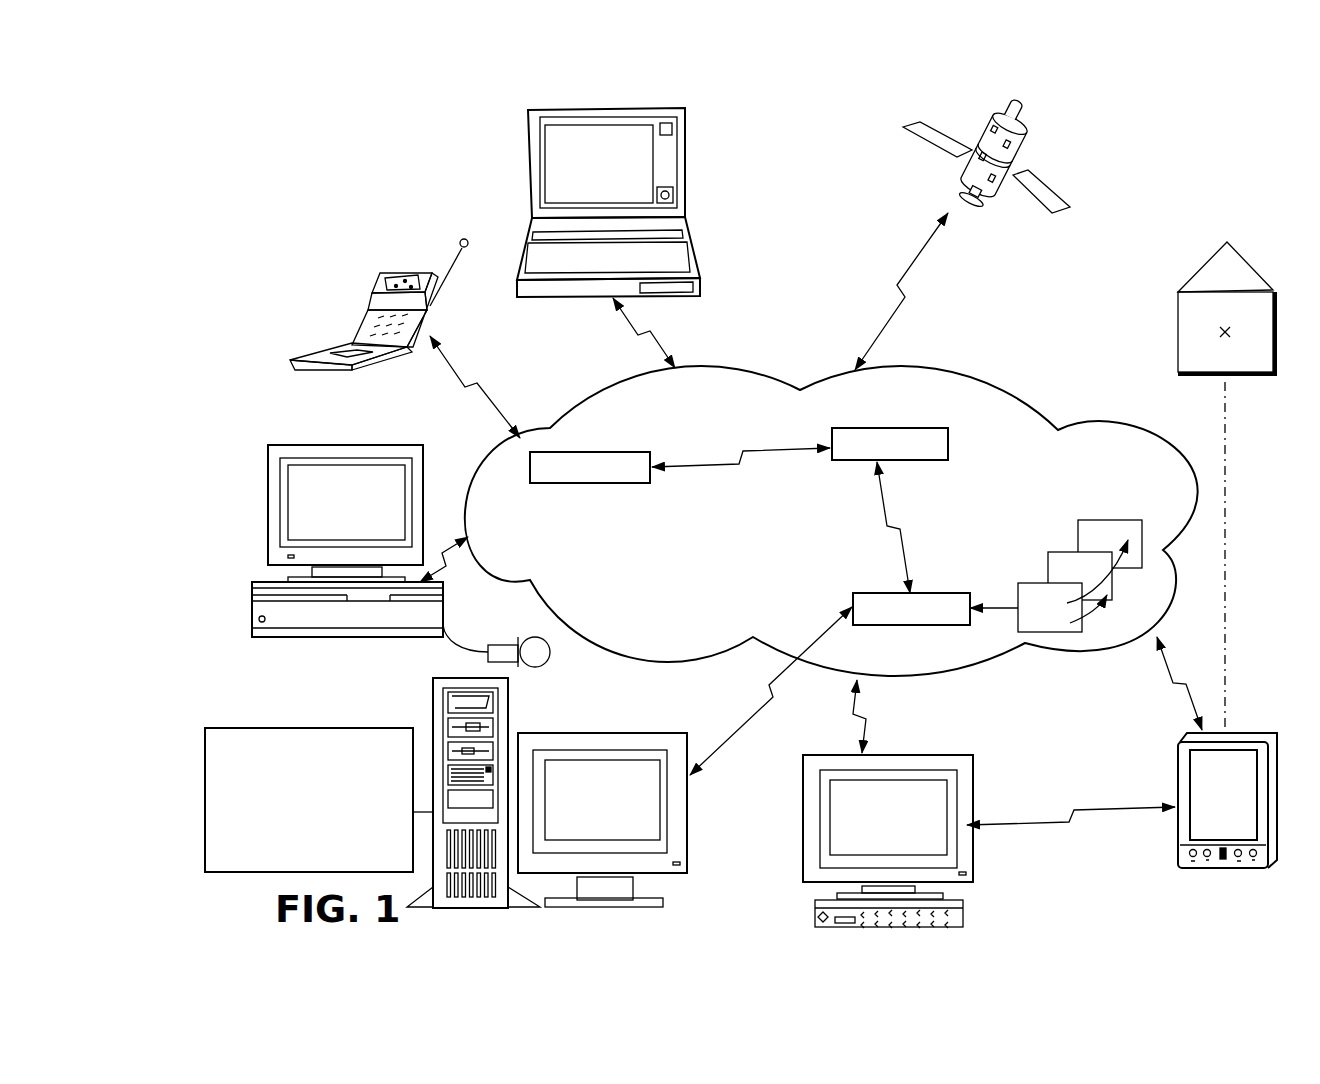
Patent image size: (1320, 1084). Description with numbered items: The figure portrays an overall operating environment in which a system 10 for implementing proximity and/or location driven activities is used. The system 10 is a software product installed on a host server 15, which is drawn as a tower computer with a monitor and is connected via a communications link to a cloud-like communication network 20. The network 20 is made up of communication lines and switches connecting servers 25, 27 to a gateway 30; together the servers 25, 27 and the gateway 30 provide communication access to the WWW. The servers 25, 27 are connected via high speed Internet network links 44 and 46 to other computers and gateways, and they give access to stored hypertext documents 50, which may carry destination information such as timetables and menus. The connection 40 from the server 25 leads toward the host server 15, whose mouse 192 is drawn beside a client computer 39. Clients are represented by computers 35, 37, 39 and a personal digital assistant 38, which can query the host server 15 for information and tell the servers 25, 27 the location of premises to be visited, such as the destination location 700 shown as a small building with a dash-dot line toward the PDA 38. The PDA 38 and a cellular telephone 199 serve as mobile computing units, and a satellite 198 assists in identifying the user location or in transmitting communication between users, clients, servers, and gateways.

The system for implementing proximity and/or location driven activities 10 is at (300, 725).
The host server 15 is at (432, 713).
The communication network 20 is at (768, 377).
The server 25 is at (890, 593).
The server 27 is at (903, 427).
The gateway 30 is at (587, 483).
The computer 35 is at (687, 182).
The computer 37 is at (943, 753).
The personal digital assistant (PDA) 38 is at (1177, 778).
The computer 39 is at (323, 447).
The communication link 40 is at (813, 647).
The high speed Internet network link 44 is at (900, 557).
The high speed Internet network link 46 is at (727, 455).
The hypertext documents 50 is at (1076, 533).
The mouse 192 is at (518, 645).
The satellite 198 is at (982, 122).
The cellular telephone 199 is at (363, 317).
The destination location 700 is at (1197, 268).